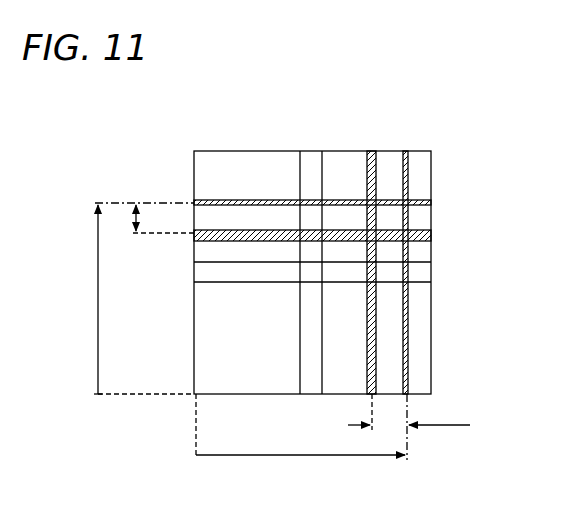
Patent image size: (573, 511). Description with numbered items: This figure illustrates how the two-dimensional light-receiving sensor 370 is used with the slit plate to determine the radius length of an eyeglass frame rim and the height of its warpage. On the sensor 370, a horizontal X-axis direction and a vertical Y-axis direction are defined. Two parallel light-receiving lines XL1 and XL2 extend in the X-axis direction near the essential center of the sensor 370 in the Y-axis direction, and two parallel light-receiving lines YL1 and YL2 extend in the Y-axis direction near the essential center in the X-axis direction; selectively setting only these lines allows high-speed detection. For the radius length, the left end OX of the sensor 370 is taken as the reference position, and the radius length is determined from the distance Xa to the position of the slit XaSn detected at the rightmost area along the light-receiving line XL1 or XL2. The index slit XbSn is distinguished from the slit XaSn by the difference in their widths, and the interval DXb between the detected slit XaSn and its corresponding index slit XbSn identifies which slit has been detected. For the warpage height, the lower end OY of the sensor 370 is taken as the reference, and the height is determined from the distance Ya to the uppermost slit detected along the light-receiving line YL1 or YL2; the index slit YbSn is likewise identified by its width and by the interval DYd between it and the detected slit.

The two-dimensional light-receiving sensor 370 is at (441, 173).
The light-receiving line YL1 is at (326, 153).
The light-receiving line YL2 is at (298, 151).
The light-receiving line XL1 is at (418, 285).
The light-receiving line XL2 is at (417, 259).
The slit XaSn is at (230, 200).
The index slit XbSn is at (378, 162).
The index slit YbSn is at (213, 230).
The distance Ya is at (132, 298).
The interval DYd is at (159, 250).
The lower end OY is at (138, 412).
The left end OX is at (178, 434).
The distance Xa is at (301, 440).
The interval DXb is at (409, 412).